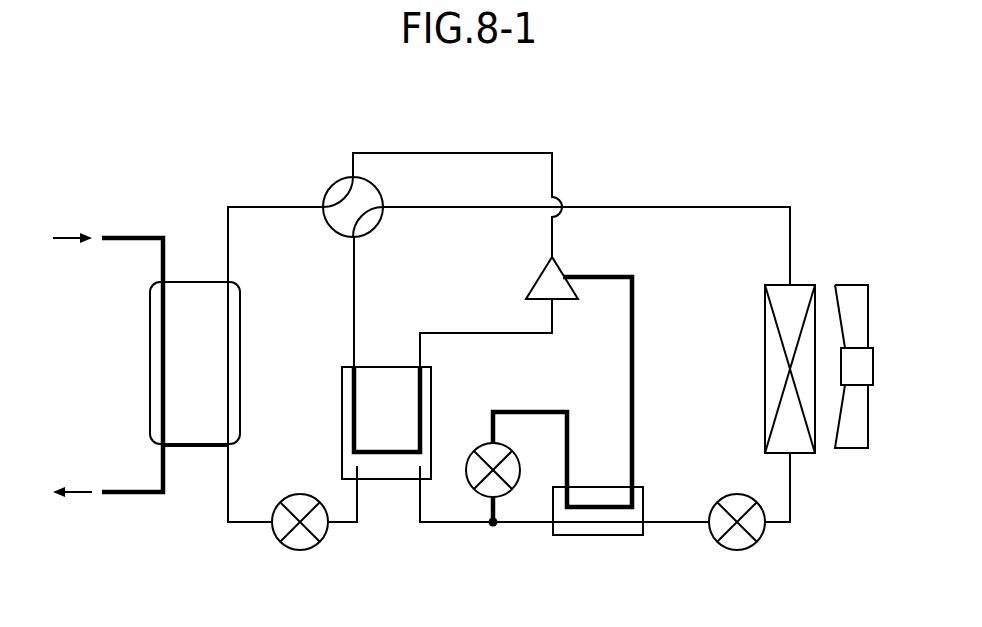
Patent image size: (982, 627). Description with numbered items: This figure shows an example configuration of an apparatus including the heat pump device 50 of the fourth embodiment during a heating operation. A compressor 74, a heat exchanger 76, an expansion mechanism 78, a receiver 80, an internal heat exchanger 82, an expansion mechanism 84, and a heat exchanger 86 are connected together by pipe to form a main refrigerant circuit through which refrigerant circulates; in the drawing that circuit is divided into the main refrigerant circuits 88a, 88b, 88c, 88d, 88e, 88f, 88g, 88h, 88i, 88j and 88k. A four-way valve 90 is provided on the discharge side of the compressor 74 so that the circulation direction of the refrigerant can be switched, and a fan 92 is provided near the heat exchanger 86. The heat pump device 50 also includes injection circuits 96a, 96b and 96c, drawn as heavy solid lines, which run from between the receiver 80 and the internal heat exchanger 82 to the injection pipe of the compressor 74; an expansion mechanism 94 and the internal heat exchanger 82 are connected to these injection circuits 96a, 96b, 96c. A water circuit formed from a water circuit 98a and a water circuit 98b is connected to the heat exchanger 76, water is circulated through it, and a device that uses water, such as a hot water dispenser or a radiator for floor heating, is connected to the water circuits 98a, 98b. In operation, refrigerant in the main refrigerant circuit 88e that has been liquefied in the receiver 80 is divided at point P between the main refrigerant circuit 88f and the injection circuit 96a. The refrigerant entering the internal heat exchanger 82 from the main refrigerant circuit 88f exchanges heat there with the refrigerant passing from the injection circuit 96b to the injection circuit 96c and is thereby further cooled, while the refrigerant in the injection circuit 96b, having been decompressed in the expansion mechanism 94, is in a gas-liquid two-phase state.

The heat pump device 50 is at (618, 161).
The compressor 74 is at (541, 278).
The heat exchanger 76 is at (240, 325).
The expansion mechanism 78 is at (300, 551).
The receiver 80 is at (342, 410).
The internal heat exchanger 82 is at (598, 536).
The expansion mechanism 84 is at (737, 551).
The heat exchanger 86 is at (796, 284).
The main refrigerant circuit 88a is at (456, 152).
The main refrigerant circuit 88b is at (262, 206).
The main refrigerant circuit 88c is at (247, 523).
The main refrigerant circuit 88d is at (344, 523).
The main refrigerant circuit 88e is at (442, 523).
The main refrigerant circuit 88f is at (527, 523).
The main refrigerant circuit 88g is at (677, 523).
The main refrigerant circuit 88h is at (790, 505).
The main refrigerant circuit 88i is at (695, 206).
The main refrigerant circuit 88j is at (354, 292).
The main refrigerant circuit 88k is at (490, 337).
The four-way valve 90 is at (342, 181).
The fan 92 is at (853, 450).
The expansion mechanism 94 is at (483, 443).
The injection circuit 96a is at (487, 509).
The injection circuit 96b is at (569, 440).
The injection circuit 96c is at (634, 390).
The water circuit 98a is at (147, 237).
The water circuit 98b is at (135, 496).
The point P is at (493, 538).